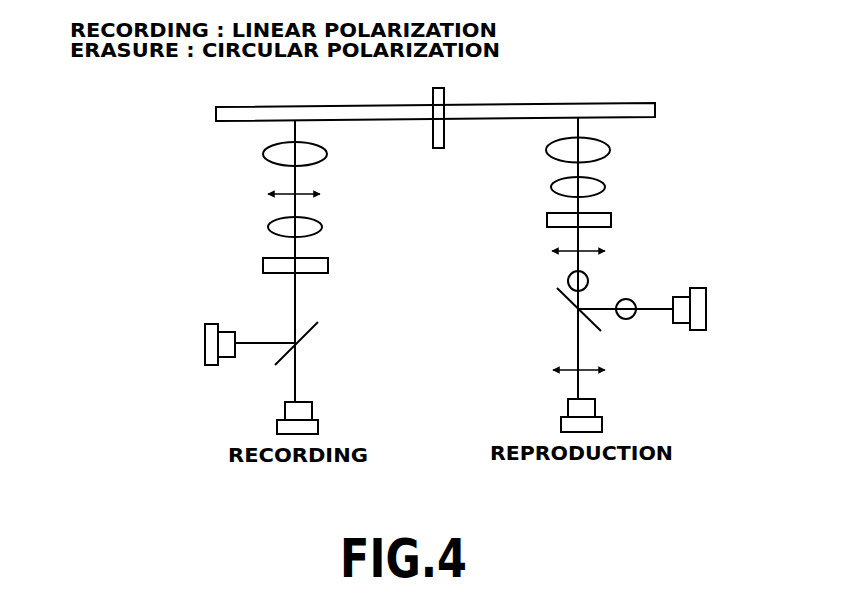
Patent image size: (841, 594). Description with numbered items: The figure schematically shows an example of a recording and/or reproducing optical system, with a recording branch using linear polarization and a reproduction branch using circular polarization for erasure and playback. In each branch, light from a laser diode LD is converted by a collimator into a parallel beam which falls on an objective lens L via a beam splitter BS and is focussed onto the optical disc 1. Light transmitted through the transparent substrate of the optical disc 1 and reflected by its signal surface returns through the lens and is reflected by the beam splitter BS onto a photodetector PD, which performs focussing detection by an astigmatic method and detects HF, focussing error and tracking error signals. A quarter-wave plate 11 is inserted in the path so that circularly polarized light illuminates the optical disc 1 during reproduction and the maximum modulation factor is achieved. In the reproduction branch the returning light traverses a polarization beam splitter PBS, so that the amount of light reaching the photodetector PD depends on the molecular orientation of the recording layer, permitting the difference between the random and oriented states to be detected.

The optical disc 1 is at (586, 108).
The λ/4 plate 11 is at (328, 264).
The objective lens L is at (445, 188).
The beam splitter BS is at (301, 343).
The polarization beam splitter PBS is at (584, 309).
The photodetector PD is at (455, 326).
The laser diode LD is at (463, 416).